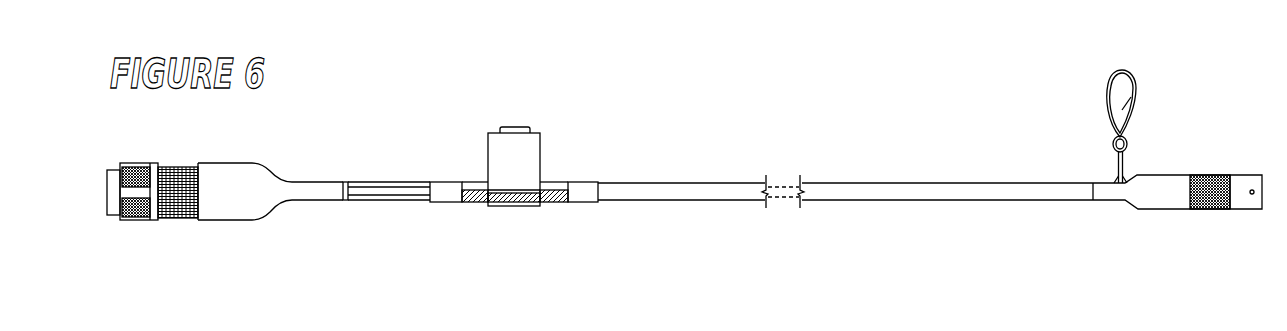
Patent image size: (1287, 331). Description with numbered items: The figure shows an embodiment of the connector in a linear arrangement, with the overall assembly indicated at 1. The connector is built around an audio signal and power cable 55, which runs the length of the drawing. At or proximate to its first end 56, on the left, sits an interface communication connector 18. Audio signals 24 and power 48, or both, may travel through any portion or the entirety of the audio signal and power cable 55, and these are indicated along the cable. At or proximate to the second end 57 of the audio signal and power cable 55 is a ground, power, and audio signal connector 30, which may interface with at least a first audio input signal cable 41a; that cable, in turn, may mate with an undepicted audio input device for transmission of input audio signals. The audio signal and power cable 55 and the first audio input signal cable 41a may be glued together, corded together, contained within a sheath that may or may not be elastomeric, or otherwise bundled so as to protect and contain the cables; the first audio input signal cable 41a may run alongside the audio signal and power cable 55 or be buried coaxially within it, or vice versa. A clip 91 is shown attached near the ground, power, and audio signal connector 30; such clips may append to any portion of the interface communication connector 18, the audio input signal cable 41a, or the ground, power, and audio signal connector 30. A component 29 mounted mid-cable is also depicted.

The neurostimulation lead system 1 is at (1272, 68).
The interface communication connector 18 is at (227, 177).
The audio signals 24 is at (782, 198).
The anchor module 29 is at (515, 127).
The ground, power, and audio signal connector 30 is at (1210, 210).
The first audio input signal cable 41a is at (1248, 175).
The power 48 is at (787, 185).
The audio signal and power cable 55 is at (702, 189).
The first end 56 is at (342, 202).
The second end 57 is at (1092, 200).
The clip 91 is at (1108, 88).